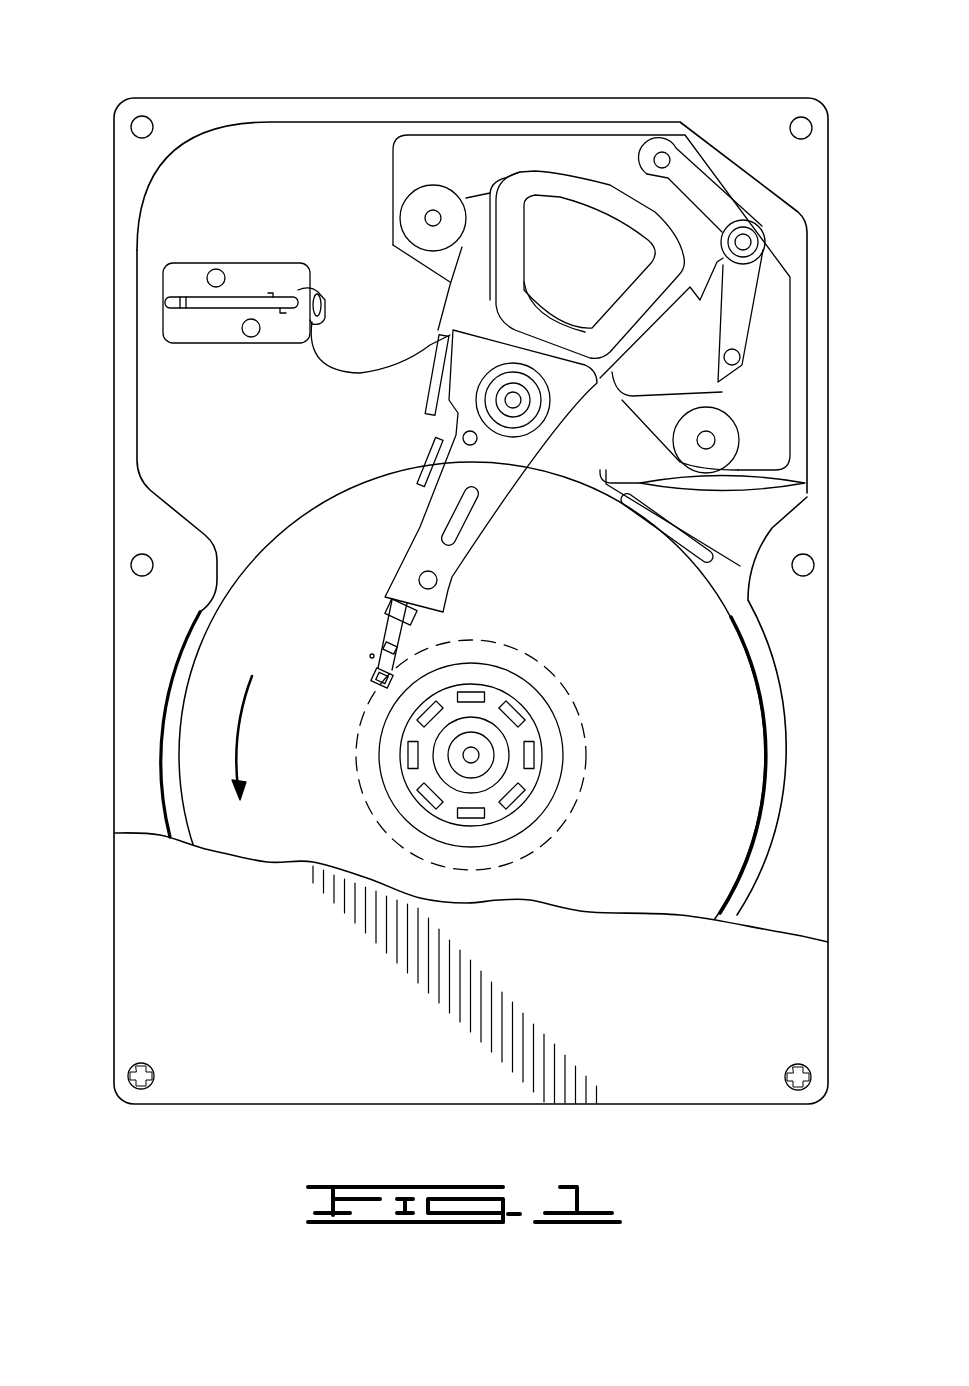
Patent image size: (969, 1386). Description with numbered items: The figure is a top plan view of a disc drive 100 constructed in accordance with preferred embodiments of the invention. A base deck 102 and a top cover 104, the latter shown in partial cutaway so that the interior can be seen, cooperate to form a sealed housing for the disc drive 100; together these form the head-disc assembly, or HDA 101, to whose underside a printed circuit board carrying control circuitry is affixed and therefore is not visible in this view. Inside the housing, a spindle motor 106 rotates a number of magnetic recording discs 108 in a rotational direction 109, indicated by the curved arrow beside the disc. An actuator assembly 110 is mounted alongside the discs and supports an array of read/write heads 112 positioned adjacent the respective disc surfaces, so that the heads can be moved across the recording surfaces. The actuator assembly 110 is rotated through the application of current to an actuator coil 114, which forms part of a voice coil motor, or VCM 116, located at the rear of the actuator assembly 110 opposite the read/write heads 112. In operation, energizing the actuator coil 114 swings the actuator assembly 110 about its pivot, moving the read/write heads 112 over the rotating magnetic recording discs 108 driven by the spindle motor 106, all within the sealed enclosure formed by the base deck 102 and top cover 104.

The disc drive 100 is at (462, 552).
The HDA 101 is at (150, 166).
The base deck 102 is at (165, 420).
The top cover 104 is at (165, 910).
The spindle motor 106 is at (504, 744).
The magnetic recording discs 108 is at (738, 770).
The rotational direction 109 is at (243, 735).
The actuator assembly 110 is at (480, 479).
The read/write heads 112 is at (376, 672).
The actuator coil 114 is at (545, 180).
The voice coil motor (VCM) 116 is at (600, 156).